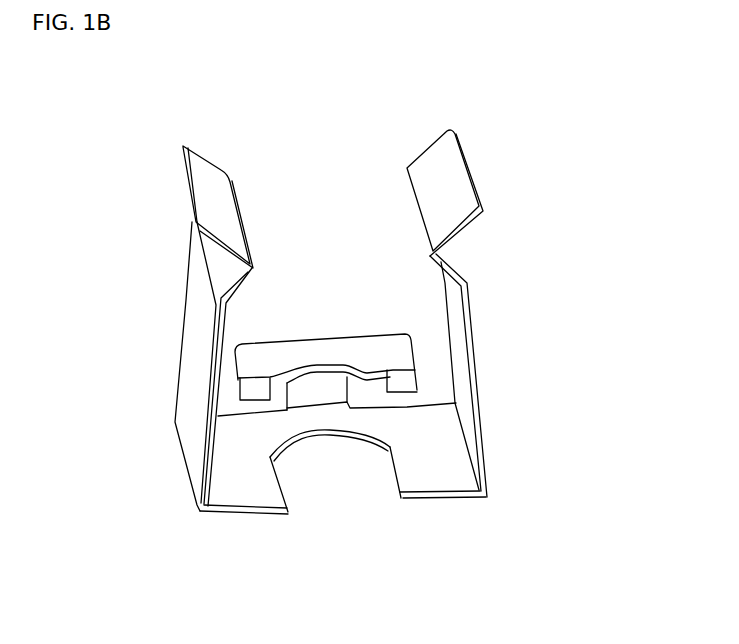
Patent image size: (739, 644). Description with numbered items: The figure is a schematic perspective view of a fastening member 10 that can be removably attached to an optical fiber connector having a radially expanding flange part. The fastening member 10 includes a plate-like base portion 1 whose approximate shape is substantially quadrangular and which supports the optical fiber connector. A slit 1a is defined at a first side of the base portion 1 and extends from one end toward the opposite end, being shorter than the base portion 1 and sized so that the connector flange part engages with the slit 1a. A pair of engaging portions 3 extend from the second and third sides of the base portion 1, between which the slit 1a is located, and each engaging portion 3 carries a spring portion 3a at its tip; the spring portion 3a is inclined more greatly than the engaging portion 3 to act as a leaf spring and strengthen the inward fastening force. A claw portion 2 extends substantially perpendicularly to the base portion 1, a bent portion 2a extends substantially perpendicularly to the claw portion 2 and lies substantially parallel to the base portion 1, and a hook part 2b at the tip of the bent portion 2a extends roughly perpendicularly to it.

The fastening member 10 is at (524, 125).
The base portion 1 is at (440, 473).
The slit 1a is at (285, 477).
The claw portion 2 is at (318, 388).
The bent portion 2a is at (262, 353).
The hook part 2b is at (402, 386).
The engaging portion 3 is at (198, 333).
The spring portion 3a is at (222, 265).